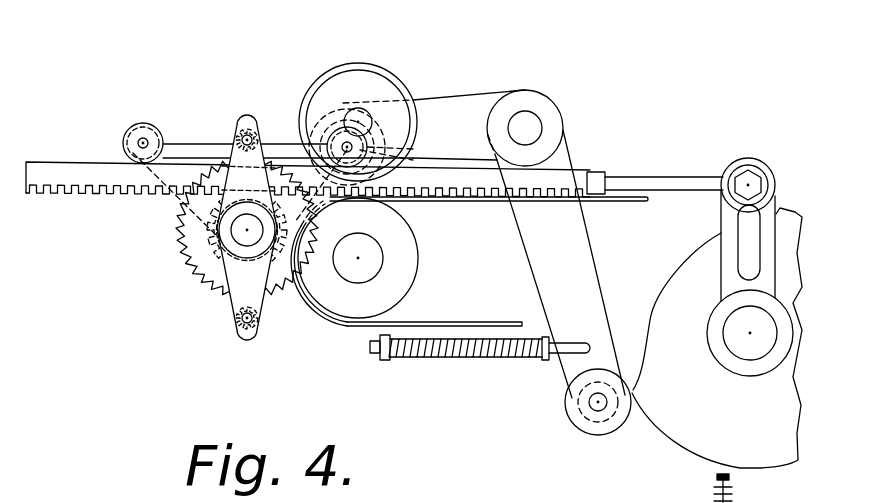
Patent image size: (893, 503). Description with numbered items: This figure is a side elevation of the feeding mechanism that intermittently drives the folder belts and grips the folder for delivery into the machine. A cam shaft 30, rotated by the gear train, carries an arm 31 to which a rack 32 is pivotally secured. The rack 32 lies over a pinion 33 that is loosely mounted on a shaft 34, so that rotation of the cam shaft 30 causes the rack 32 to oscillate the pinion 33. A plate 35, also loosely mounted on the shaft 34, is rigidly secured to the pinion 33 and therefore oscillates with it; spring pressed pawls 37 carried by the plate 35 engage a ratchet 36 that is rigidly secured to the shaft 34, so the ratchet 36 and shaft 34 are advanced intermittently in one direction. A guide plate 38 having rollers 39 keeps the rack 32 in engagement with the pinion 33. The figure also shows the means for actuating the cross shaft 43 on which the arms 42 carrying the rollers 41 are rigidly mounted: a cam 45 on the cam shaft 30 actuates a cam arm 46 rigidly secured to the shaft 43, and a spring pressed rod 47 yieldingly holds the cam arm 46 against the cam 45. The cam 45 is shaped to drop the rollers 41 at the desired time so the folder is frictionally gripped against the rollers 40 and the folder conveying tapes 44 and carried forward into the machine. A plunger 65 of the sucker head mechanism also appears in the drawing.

The cam shaft 30 is at (745, 347).
The arm 31 is at (722, 225).
The rack 32 is at (686, 176).
The pinion 33 is at (210, 249).
The shaft 34 is at (243, 237).
The plate 35 is at (240, 332).
The ratchet 36 is at (172, 223).
The spring pressed pawls 37 is at (247, 134).
The guide plate 38 is at (197, 143).
The rollers 39 is at (148, 128).
The rollers 40 is at (357, 305).
The rollers 41 is at (388, 78).
The arms 42 is at (457, 98).
The cross shaft 43 is at (545, 128).
The folder conveying tapes 44 is at (455, 318).
The cam 45 is at (703, 442).
The cam arm 46 is at (593, 272).
The spring pressed rod 47 is at (483, 355).
The plunger 65 is at (735, 485).